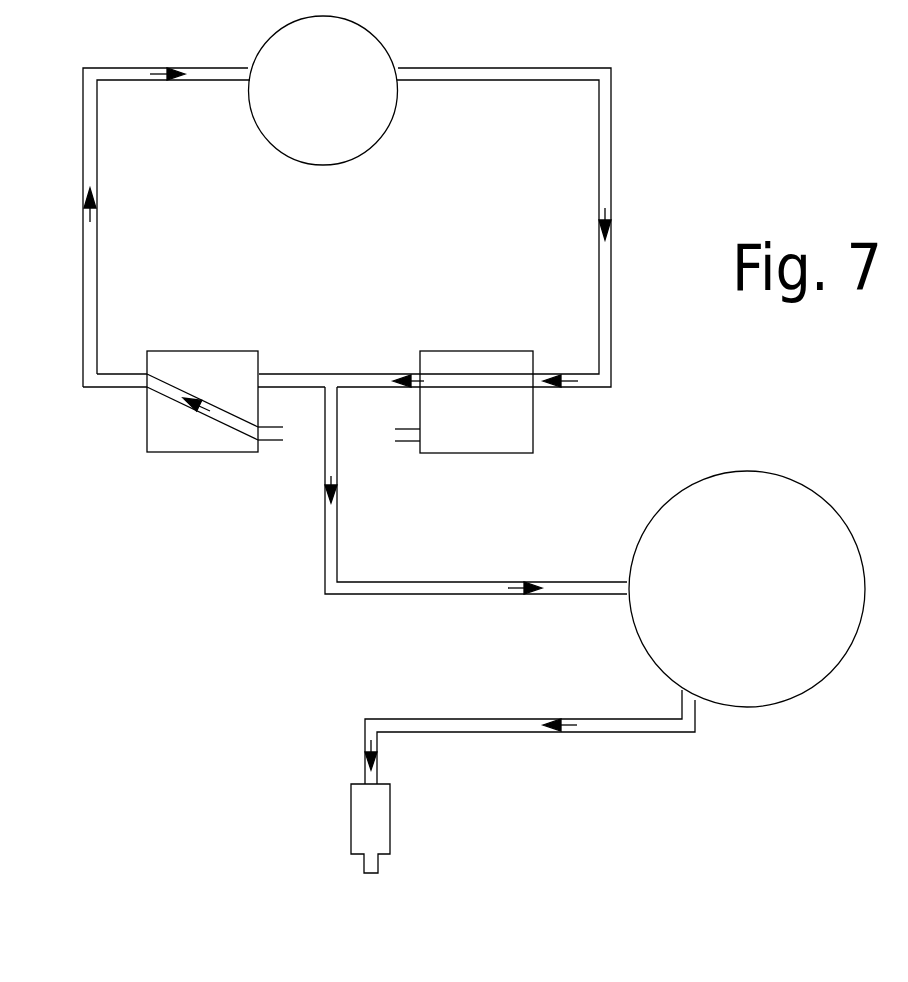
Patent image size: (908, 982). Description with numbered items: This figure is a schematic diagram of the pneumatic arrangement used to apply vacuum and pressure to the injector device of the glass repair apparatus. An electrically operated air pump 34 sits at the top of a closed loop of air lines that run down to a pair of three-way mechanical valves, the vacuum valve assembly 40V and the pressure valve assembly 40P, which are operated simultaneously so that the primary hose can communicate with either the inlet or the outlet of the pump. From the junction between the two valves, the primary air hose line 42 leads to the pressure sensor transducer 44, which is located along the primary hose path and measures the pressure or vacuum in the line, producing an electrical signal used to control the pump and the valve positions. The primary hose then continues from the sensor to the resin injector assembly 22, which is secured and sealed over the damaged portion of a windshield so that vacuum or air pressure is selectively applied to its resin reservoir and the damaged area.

The air pump 34 is at (323, 137).
The vacuum air valve assembly 40V is at (202, 442).
The pressure air valve assembly 40P is at (488, 442).
The primary air hose line 42 is at (463, 587).
The pressure sensor transducer 44 is at (822, 525).
The resin injector assembly 22 is at (375, 836).